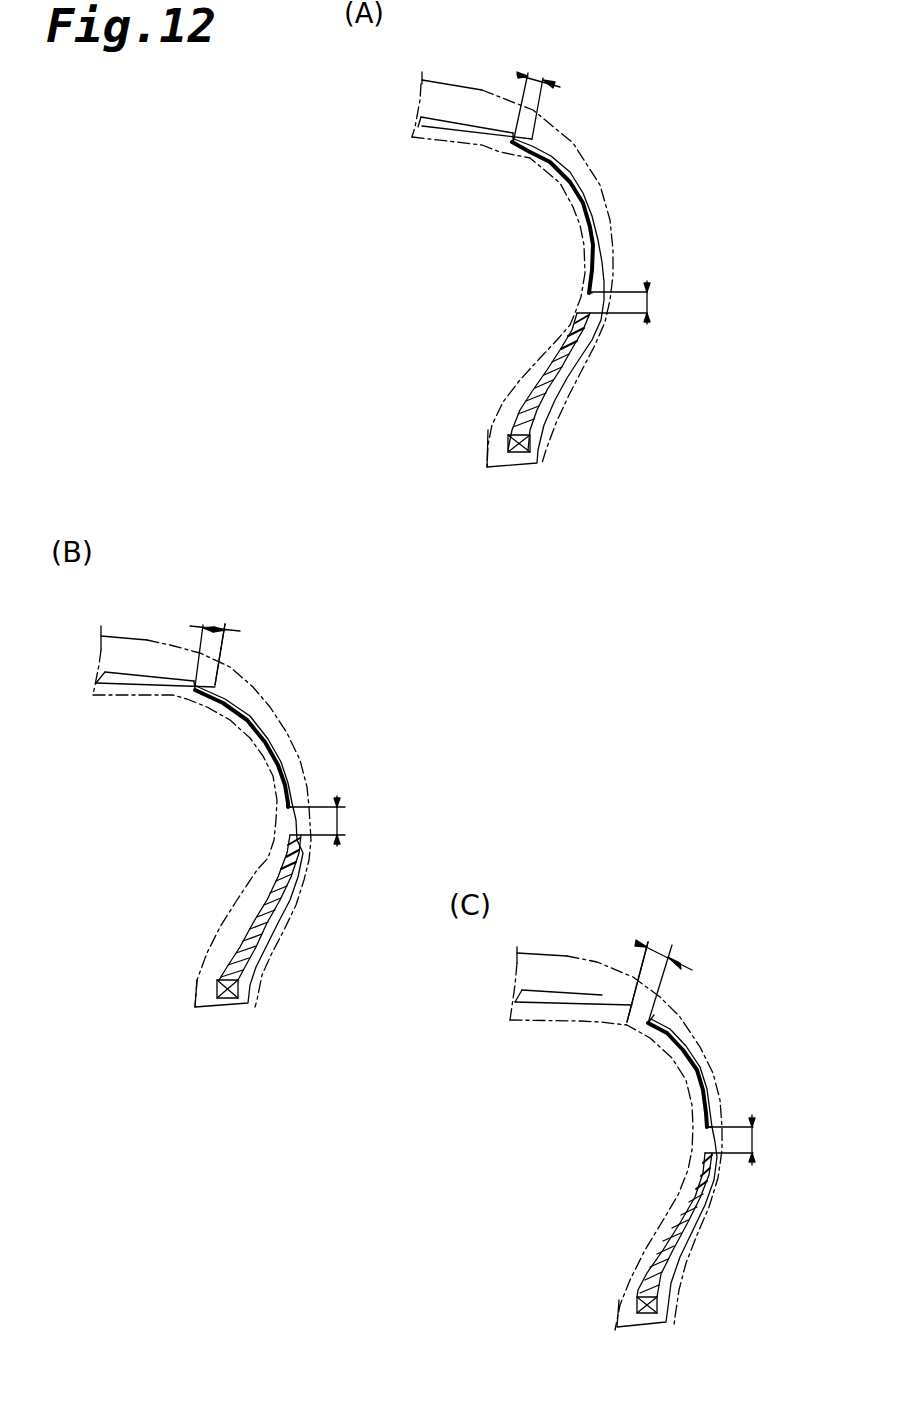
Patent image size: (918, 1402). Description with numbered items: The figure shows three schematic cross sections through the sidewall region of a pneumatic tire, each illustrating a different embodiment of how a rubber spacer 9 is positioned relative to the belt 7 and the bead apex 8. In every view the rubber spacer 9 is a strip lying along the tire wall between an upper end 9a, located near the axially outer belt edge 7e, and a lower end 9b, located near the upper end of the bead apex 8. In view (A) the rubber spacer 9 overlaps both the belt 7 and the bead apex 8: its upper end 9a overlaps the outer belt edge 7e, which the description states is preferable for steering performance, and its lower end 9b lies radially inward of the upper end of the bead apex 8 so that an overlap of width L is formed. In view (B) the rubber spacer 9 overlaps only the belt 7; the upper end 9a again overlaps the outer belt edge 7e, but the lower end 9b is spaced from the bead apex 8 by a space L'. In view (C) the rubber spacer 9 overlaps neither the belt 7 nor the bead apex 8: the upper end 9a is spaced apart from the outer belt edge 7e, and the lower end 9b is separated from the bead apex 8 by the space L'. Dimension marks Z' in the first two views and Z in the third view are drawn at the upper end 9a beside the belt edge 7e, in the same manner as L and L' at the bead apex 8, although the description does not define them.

In FIG. 12A, the belt 7 is at (476, 115).
In FIG. 12B, the belt 7 is at (158, 670).
In FIG. 12C, the belt 7 is at (575, 985).
In FIG. 12B, the axially outer belt edge 7e is at (223, 683).
In FIG. 12C, the axially outer belt edge 7e is at (628, 1014).
In FIG. 12A, the bead apex 8 is at (550, 382).
In FIG. 12B, the bead apex 8 is at (252, 923).
In FIG. 12C, the bead apex 8 is at (670, 1240).
In FIG. 12A, the rubber spacer 9 is at (585, 176).
In FIG. 12B, the rubber spacer 9 is at (272, 733).
In FIG. 12C, the rubber spacer 9 is at (700, 1073).
In FIG. 12A, the upper end of the rubber spacer 9a is at (513, 160).
In FIG. 12B, the upper end of the rubber spacer 9a is at (190, 706).
In FIG. 12C, the upper end of the rubber spacer 9a is at (658, 1020).
In FIG. 12A, the lower end of the rubber spacer 9b is at (566, 305).
In FIG. 12B, the lower end of the rubber spacer 9b is at (274, 807).
In FIG. 12C, the lower end of the rubber spacer 9b is at (696, 1128).
In FIG. 12C, the gap between plate end and ring end Z is at (671, 948).
In FIG. 12A, the gap between plate end and ring end Z' is at (545, 73).
In FIG. 12B, the gap between plate end and ring end Z' is at (230, 621).
In FIG. 12A, the overlap width L is at (636, 287).
In FIG. 12B, the space between rubber spacer and bead apex L' is at (340, 802).
In FIG. 12C, the space between rubber spacer and bead apex L' is at (751, 1128).